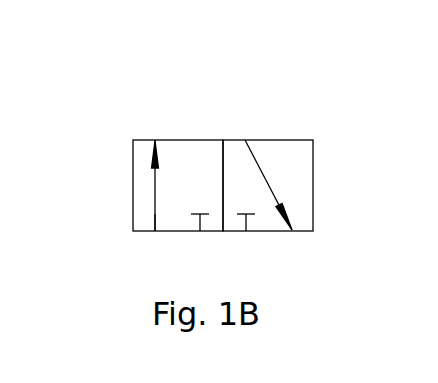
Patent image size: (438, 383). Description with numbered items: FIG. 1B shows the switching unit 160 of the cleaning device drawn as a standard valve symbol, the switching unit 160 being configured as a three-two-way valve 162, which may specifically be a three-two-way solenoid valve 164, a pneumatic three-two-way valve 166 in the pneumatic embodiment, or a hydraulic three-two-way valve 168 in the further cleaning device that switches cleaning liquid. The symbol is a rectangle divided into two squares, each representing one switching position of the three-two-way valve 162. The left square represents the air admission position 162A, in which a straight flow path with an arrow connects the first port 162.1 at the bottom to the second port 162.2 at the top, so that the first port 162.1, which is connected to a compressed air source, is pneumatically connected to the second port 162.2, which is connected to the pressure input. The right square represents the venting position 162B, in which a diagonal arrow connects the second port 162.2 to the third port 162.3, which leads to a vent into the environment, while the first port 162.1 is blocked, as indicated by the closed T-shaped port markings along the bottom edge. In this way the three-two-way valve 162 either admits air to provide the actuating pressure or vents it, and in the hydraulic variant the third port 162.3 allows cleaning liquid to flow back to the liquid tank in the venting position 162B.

The switching unit 160 is at (247, 147).
The 3/2-way valve 162 is at (247, 147).
The 3/2-way solenoid valve 164 is at (247, 147).
The pneumatic 3/2-way valve 166 is at (247, 147).
The hydraulic 3/2-way valve 168 is at (247, 147).
The air admission position 162A is at (195, 148).
The venting position 162B is at (290, 160).
The first port 162.1 is at (153, 232).
The second port 162.2 is at (153, 140).
The third port 162.3 is at (200, 232).